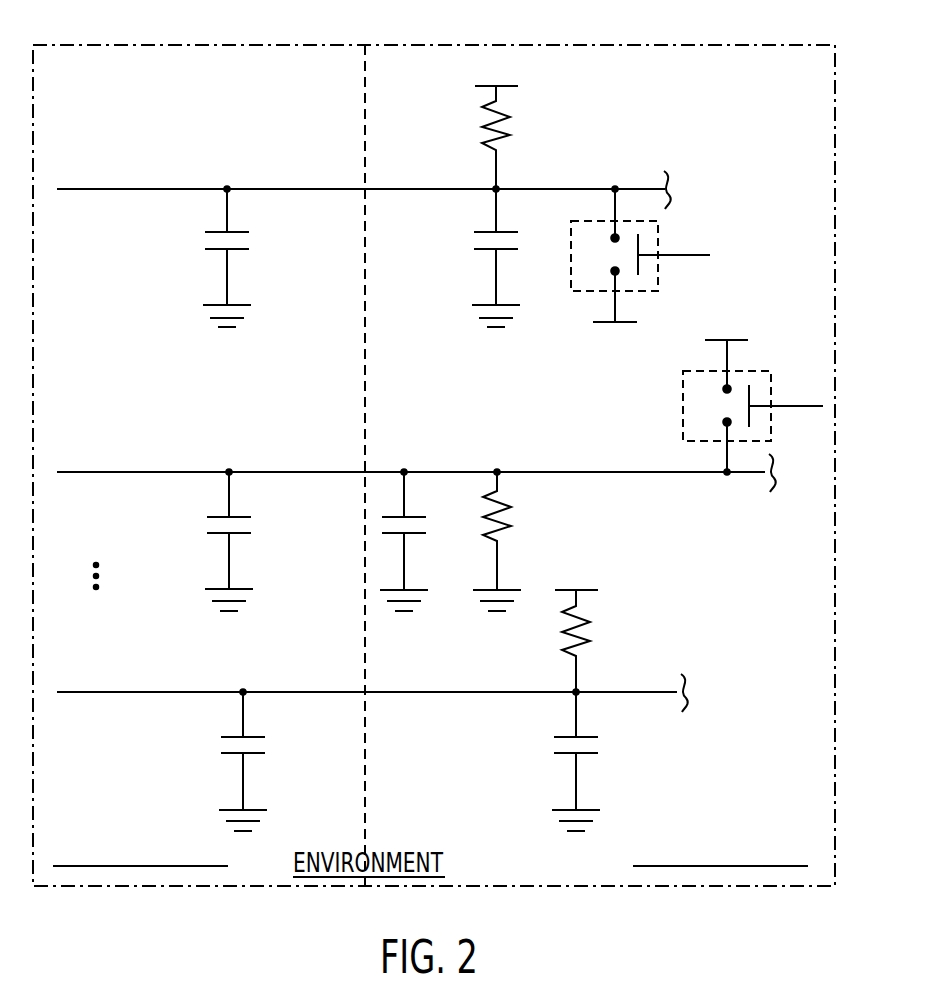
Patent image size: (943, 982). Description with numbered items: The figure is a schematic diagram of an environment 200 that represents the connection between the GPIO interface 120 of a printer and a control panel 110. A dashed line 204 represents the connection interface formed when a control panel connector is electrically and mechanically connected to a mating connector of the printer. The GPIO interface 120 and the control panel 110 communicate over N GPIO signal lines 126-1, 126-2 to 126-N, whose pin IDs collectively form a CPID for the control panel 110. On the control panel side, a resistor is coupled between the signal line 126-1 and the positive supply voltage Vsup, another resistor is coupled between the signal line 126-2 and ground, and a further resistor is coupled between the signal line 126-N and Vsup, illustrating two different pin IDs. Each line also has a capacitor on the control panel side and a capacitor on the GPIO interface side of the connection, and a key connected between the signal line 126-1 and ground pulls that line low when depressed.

The environment 200 is at (647, 31).
The dashed line 204 is at (365, 92).
The GPIO interface 120 is at (137, 840).
The control panel 110 is at (728, 838).
The GPIO signal line 126-1 is at (152, 189).
The GPIO signal line 126-2 is at (152, 472).
The GPIO signal line 126-N is at (152, 692).